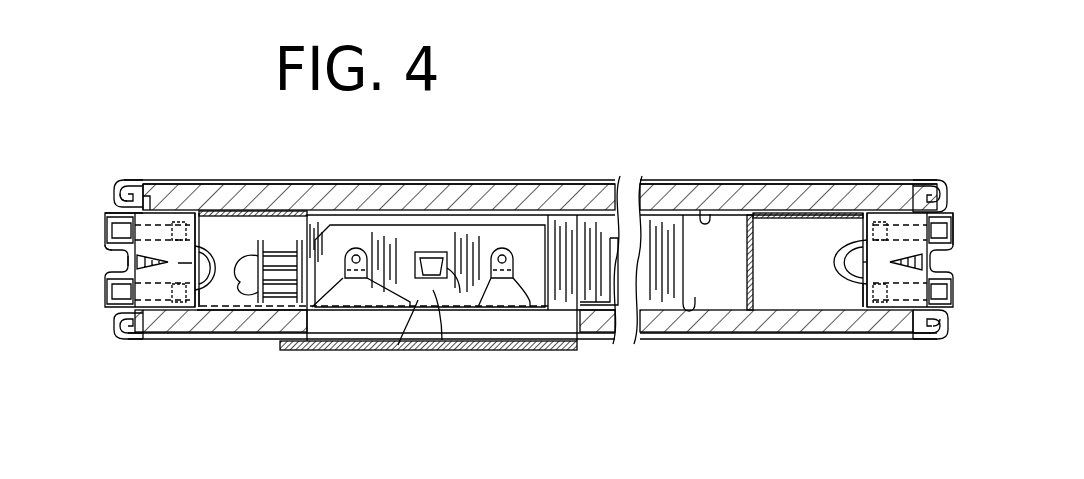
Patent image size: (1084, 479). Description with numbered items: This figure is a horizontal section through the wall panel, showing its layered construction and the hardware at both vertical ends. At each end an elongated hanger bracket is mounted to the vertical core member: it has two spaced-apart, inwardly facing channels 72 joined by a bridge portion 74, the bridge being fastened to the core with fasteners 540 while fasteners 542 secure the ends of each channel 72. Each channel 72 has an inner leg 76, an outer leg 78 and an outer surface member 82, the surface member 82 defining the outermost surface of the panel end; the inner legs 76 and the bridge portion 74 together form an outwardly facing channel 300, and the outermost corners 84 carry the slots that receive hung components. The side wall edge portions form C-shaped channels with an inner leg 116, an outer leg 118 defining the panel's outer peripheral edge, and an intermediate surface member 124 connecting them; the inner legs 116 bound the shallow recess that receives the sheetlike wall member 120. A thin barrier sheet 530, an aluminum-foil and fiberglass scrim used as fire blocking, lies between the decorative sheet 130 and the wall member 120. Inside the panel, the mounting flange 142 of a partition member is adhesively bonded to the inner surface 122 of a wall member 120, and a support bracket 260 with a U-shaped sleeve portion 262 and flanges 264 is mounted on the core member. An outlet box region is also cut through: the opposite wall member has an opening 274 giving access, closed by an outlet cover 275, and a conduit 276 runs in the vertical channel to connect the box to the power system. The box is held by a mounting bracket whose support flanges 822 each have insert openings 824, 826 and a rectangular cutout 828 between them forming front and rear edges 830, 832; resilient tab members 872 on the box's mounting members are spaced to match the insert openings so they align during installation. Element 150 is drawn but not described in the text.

The inwardly facing channel 72 is at (105, 310).
The bridge portion 74 is at (180, 308).
The inner leg 76 is at (124, 259).
The outer leg 78 is at (108, 213).
The outer surface member 82 is at (962, 227).
The outermost corner 84 is at (105, 222).
The inner leg 116 is at (150, 193).
The outer leg 118 is at (118, 188).
The wall member 120 is at (600, 206).
The inner surface 122 is at (700, 212).
The intermediate surface member 124 is at (130, 192).
The decorative sheet 130 is at (560, 200).
The mounting flange 142 is at (248, 211).
The strut 150 is at (647, 300).
The support bracket 260 is at (836, 281).
The U-shaped sleeve portion 262 is at (214, 247).
The flange 264 is at (205, 306).
The opening 274 is at (503, 346).
The outlet cover 275 is at (442, 340).
The conduit 276 is at (248, 288).
The outwardly facing channel 300 is at (100, 273).
The barrier sheet 530 is at (556, 220).
The fastener 540 is at (907, 264).
The fastener 542 is at (947, 338).
The support flange 822 is at (398, 345).
The insert opening 824 is at (356, 297).
The insert opening 826 is at (511, 302).
The rectangular cutout 828 is at (460, 293).
The front edge 830 is at (452, 342).
The rear edge 832 is at (425, 251).
The resilient tab member 872 is at (350, 252).